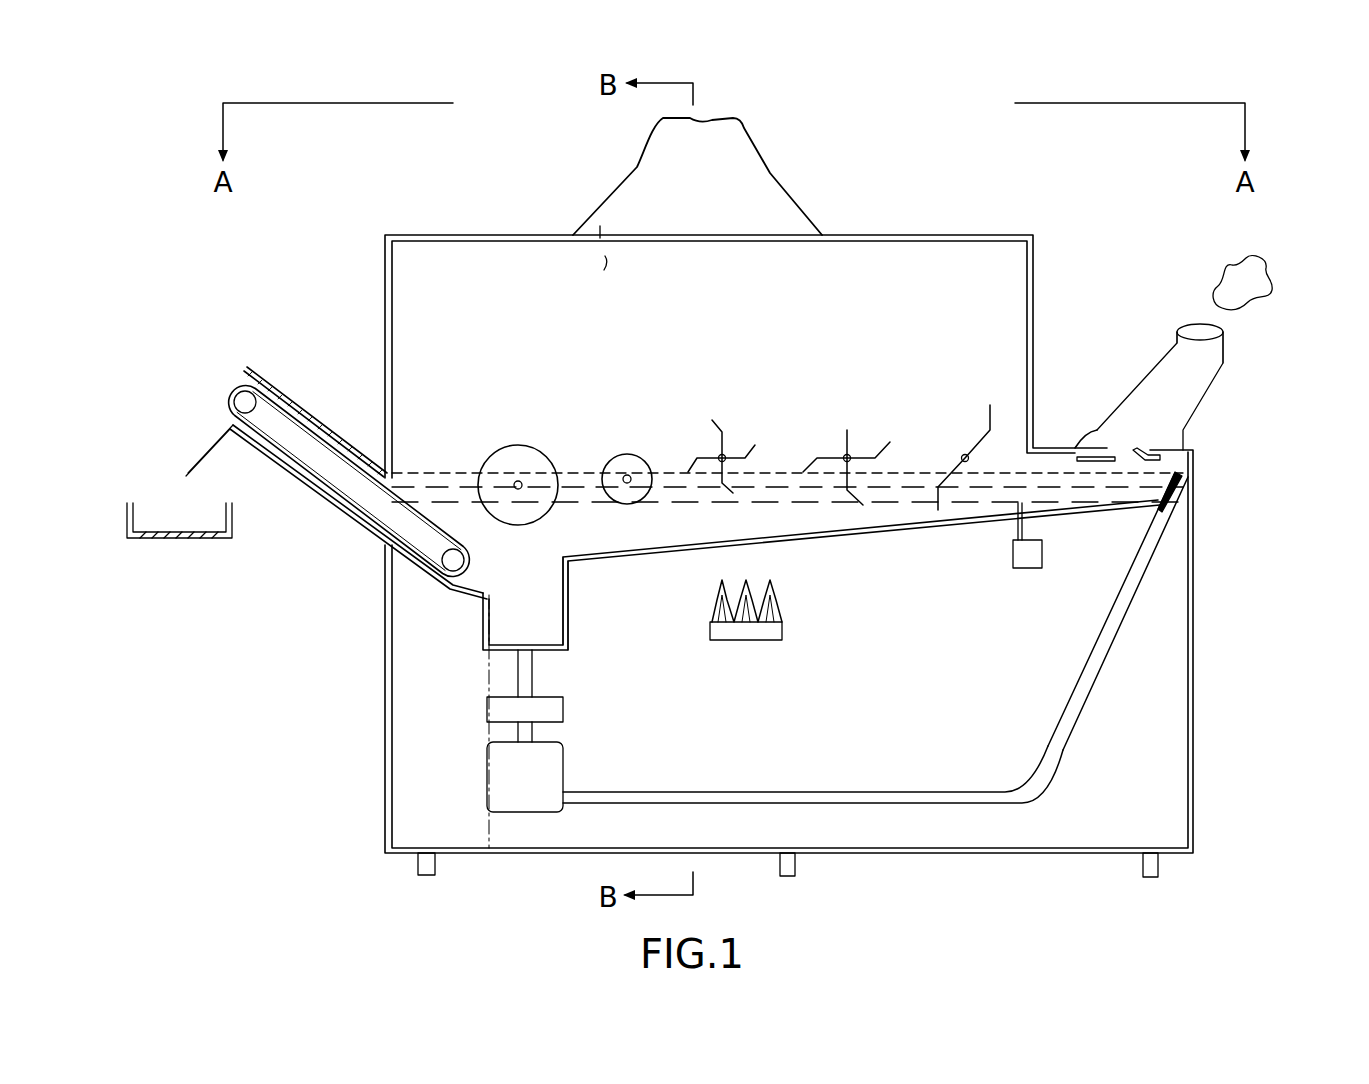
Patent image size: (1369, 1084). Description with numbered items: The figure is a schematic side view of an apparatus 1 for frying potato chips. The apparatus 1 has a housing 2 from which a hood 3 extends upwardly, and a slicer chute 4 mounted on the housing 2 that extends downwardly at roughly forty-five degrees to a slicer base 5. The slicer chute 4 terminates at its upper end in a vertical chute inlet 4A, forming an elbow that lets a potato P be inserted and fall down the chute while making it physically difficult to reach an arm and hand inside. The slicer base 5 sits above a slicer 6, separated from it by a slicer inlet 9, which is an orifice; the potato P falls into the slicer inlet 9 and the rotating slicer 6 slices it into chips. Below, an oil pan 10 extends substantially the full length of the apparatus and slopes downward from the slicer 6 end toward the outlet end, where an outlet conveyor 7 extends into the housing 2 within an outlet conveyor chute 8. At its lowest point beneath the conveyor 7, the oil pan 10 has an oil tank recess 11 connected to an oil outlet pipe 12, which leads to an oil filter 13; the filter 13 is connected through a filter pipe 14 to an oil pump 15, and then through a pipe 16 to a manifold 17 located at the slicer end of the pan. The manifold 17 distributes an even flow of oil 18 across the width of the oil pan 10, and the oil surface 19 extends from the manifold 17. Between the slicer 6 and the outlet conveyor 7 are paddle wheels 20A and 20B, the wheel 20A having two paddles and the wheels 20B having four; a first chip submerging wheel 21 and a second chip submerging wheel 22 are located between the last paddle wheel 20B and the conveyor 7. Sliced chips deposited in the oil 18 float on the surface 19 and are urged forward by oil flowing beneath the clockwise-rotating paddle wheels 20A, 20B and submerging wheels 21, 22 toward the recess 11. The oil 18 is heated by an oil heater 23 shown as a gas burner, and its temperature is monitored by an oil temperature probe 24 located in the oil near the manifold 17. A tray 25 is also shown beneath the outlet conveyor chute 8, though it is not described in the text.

The apparatus 1 is at (188, 793).
The housing 2 is at (385, 712).
The hood 3 is at (768, 173).
The slicer chute 4 is at (1207, 402).
The chute inlet 4A is at (1225, 347).
The potato P is at (1262, 283).
The slicer base 5 is at (1092, 430).
The slicer 6 is at (1163, 462).
The outlet conveyor 7 is at (237, 388).
The outlet conveyor chute 8 is at (335, 505).
The slicer inlet 9 is at (1126, 446).
The oil pan 10 is at (832, 545).
The oil tank recess 11 is at (568, 620).
The oil outlet pipe 12 is at (532, 677).
The oil filter 13 is at (563, 710).
The filter pipe 14 is at (532, 732).
The oil pump 15 is at (563, 755).
The pipe 16 is at (760, 792).
The manifold 17 is at (1178, 485).
The oil 18 is at (902, 520).
The oil surface 19 is at (432, 474).
The paddle wheel 20A is at (990, 405).
The paddle wheels 20B is at (847, 430).
The first chip submerging wheel 21 is at (618, 464).
The second chip submerging wheel 22 is at (519, 453).
The oil heater 23 is at (783, 630).
The oil temperature probe 24 is at (1042, 548).
The collection tray 25 is at (200, 547).